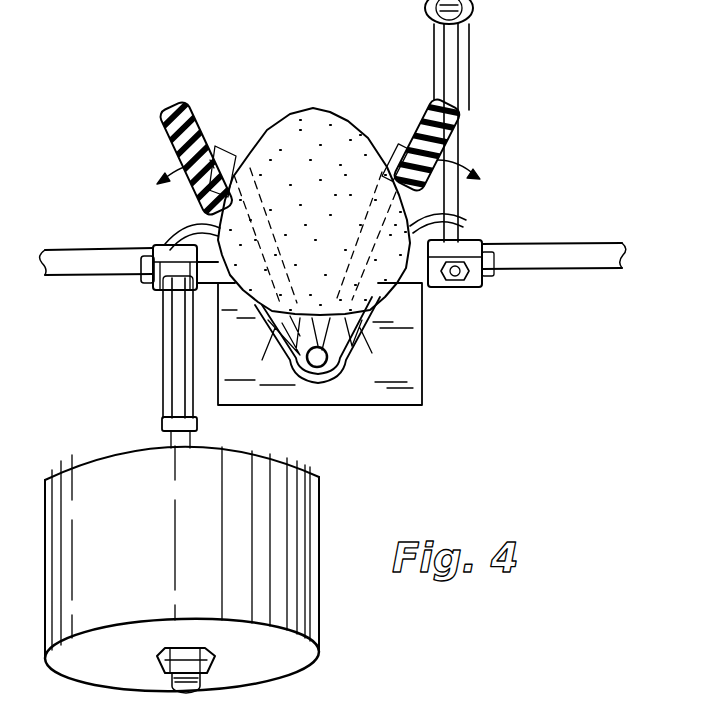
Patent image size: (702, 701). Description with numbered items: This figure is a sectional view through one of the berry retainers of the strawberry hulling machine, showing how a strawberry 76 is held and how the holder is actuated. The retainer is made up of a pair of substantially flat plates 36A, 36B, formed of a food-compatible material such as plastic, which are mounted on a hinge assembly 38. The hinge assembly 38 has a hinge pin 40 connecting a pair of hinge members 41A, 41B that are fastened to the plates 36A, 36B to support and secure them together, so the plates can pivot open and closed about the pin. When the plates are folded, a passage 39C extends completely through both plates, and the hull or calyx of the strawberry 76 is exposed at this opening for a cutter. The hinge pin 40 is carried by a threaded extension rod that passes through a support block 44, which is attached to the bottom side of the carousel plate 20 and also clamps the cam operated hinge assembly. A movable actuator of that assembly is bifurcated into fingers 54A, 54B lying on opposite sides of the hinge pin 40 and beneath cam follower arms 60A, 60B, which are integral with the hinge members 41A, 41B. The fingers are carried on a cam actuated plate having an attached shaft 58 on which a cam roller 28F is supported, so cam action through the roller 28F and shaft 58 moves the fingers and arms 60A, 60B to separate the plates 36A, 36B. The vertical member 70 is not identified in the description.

The carousel plate 20 is at (525, 256).
The cam roller 28F is at (297, 470).
The berry retainer plate 36A is at (438, 135).
The berry retainer plate 36B is at (187, 163).
The hinge assembly 38 is at (352, 380).
The passage 39C is at (210, 160).
The hinge pin 40 is at (318, 367).
The hinge member 41A is at (405, 155).
The hinge member 41B is at (222, 147).
The support block 44 is at (412, 357).
The finger 54A is at (460, 287).
The finger 54B is at (150, 274).
The shaft 58 is at (178, 347).
The cam follower arm 60A is at (468, 214).
The cam follower arm 60B is at (195, 223).
The vertical post 70 is at (459, 147).
The strawberry 76 is at (327, 106).